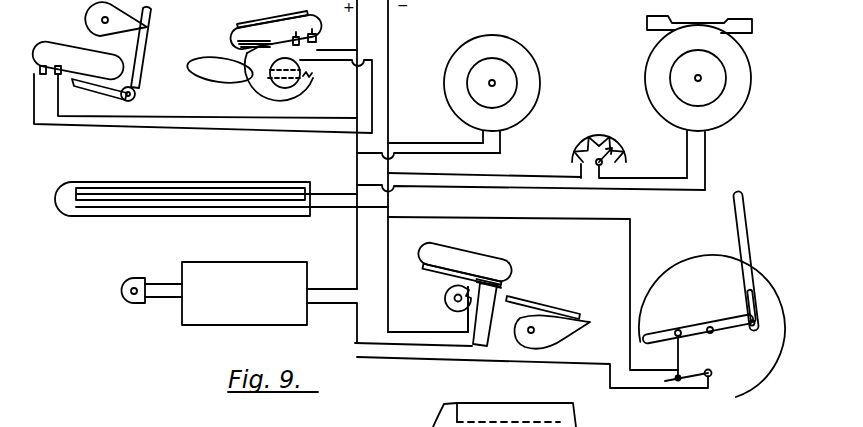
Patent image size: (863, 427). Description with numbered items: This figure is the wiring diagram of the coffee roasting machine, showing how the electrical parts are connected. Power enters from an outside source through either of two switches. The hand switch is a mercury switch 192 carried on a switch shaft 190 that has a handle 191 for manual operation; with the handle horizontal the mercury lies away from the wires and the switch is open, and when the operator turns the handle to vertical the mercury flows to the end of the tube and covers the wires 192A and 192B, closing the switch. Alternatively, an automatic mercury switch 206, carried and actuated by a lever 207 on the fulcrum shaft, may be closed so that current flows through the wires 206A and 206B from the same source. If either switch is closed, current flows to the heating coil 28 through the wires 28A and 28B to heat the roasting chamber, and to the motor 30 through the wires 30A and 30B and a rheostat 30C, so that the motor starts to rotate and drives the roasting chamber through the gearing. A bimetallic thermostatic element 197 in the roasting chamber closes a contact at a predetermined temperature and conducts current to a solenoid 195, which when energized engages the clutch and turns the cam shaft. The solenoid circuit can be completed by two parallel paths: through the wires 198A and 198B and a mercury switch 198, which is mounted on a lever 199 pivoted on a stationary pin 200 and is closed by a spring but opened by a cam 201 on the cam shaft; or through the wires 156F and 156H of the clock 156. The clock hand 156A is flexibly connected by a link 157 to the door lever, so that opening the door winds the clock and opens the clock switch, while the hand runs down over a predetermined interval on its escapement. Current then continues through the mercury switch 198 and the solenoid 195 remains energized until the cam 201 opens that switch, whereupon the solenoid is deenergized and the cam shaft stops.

The heating coil 28 is at (507, 28).
The wire 28A is at (447, 132).
The wire 28B is at (444, 157).
The motor 30 is at (656, 57).
The wire 30A is at (568, 176).
The wire 30B is at (622, 193).
The rheostat 30C is at (590, 143).
The clock 156 is at (712, 326).
The hand 156A is at (705, 323).
The wire 156F is at (676, 376).
The wire 156H is at (690, 372).
The link 157 is at (746, 238).
The switch shaft 190 is at (287, 90).
The handle 191 is at (232, 82).
The mercury switch 192 is at (233, 30).
The wire 192A is at (318, 36).
The wire 192B is at (338, 62).
The solenoid 195 is at (214, 293).
The bimetallic thermostatic element 197 is at (173, 183).
The mercury switch 198 is at (462, 253).
The wire 198A is at (428, 310).
The wire 198B is at (476, 345).
The lever 199 is at (532, 288).
The stationary pin 200 is at (452, 298).
The cam 201 is at (552, 331).
The mercury switch 206 is at (78, 60).
The wire 206A is at (115, 115).
The wire 206B is at (131, 127).
The lever 207 is at (141, 47).